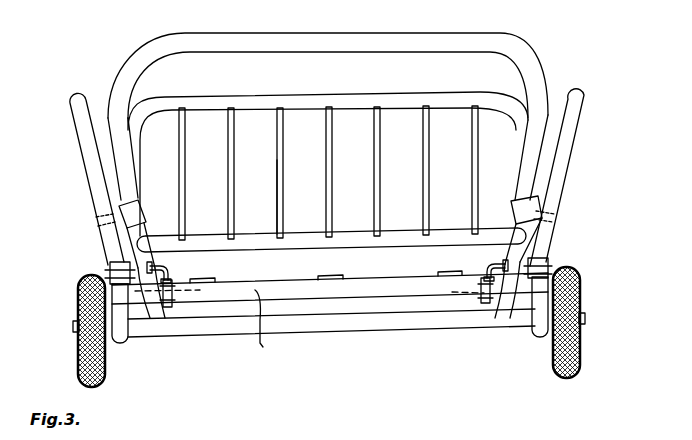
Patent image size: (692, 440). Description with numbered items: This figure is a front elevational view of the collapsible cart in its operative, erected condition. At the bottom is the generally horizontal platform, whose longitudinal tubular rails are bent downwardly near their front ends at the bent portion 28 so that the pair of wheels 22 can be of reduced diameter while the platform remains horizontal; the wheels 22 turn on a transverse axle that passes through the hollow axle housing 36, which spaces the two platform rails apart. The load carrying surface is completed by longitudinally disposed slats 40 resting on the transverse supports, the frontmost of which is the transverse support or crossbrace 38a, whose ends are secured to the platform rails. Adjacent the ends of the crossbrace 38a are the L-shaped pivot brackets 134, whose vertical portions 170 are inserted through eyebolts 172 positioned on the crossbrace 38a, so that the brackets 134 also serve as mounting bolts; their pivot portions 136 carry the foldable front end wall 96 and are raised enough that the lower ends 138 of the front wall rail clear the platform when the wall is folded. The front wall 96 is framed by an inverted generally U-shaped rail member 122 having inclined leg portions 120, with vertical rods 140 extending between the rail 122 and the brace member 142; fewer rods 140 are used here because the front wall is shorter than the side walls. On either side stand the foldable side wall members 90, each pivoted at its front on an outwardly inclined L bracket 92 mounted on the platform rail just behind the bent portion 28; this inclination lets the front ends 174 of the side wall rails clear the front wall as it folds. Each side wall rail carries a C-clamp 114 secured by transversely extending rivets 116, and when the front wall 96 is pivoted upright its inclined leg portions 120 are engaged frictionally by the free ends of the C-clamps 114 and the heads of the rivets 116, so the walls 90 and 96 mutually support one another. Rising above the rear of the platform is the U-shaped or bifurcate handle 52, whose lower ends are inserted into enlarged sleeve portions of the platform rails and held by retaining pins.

The wheels 22 is at (79, 376).
The bent portion 28 is at (120, 344).
The axle housing 36 is at (340, 333).
The frontmost transverse support 38a is at (278, 326).
The slats 40 is at (222, 280).
The handle 52 is at (323, 33).
The foldable side wall members 90 is at (72, 106).
The L bracket 92 is at (110, 270).
The foldable front end wall 96 is at (320, 97).
The C-clamp 114 is at (121, 210).
The rivets 116 is at (98, 226).
The inclined leg portions 120 is at (118, 190).
The front wall rail member 122 is at (405, 95).
The L-shaped brackets 134 is at (168, 270).
The pivot portions 136 is at (141, 305).
The lower ends 138 is at (153, 306).
The vertical rods 140 is at (424, 198).
The brace member 142 is at (292, 225).
The vertical portions 170 is at (309, 289).
The eyebolts 172 is at (168, 308).
The front ends 174 is at (131, 312).